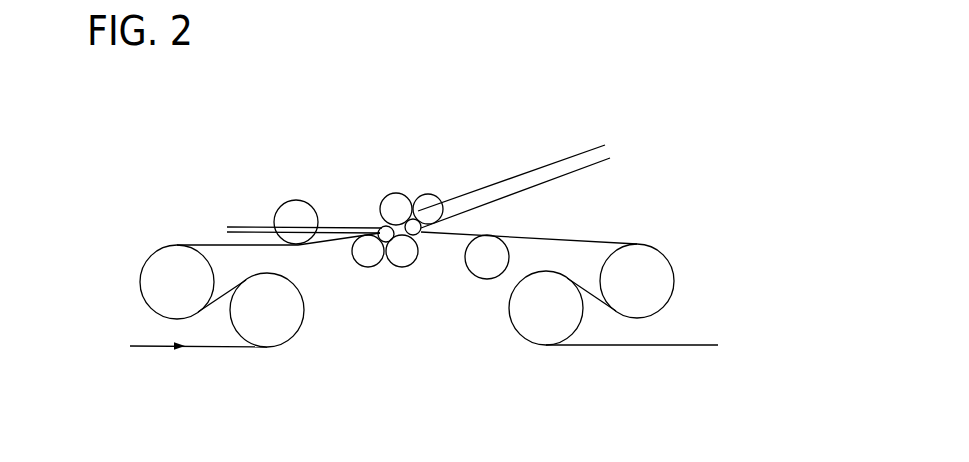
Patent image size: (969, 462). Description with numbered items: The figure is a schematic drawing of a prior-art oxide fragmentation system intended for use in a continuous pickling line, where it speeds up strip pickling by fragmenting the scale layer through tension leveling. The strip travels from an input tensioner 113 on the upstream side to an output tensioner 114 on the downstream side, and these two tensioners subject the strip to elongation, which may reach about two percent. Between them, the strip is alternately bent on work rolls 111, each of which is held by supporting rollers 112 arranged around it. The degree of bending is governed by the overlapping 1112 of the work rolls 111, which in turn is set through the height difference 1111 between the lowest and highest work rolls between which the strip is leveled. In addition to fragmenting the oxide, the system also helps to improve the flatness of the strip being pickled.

The work rolls 111 is at (371, 218).
The supporting rollers 112 is at (432, 185).
The input tensioner 113 is at (197, 231).
The output tensioner 114 is at (608, 226).
The height difference 1111 is at (573, 212).
The overlapping 1112 is at (245, 252).